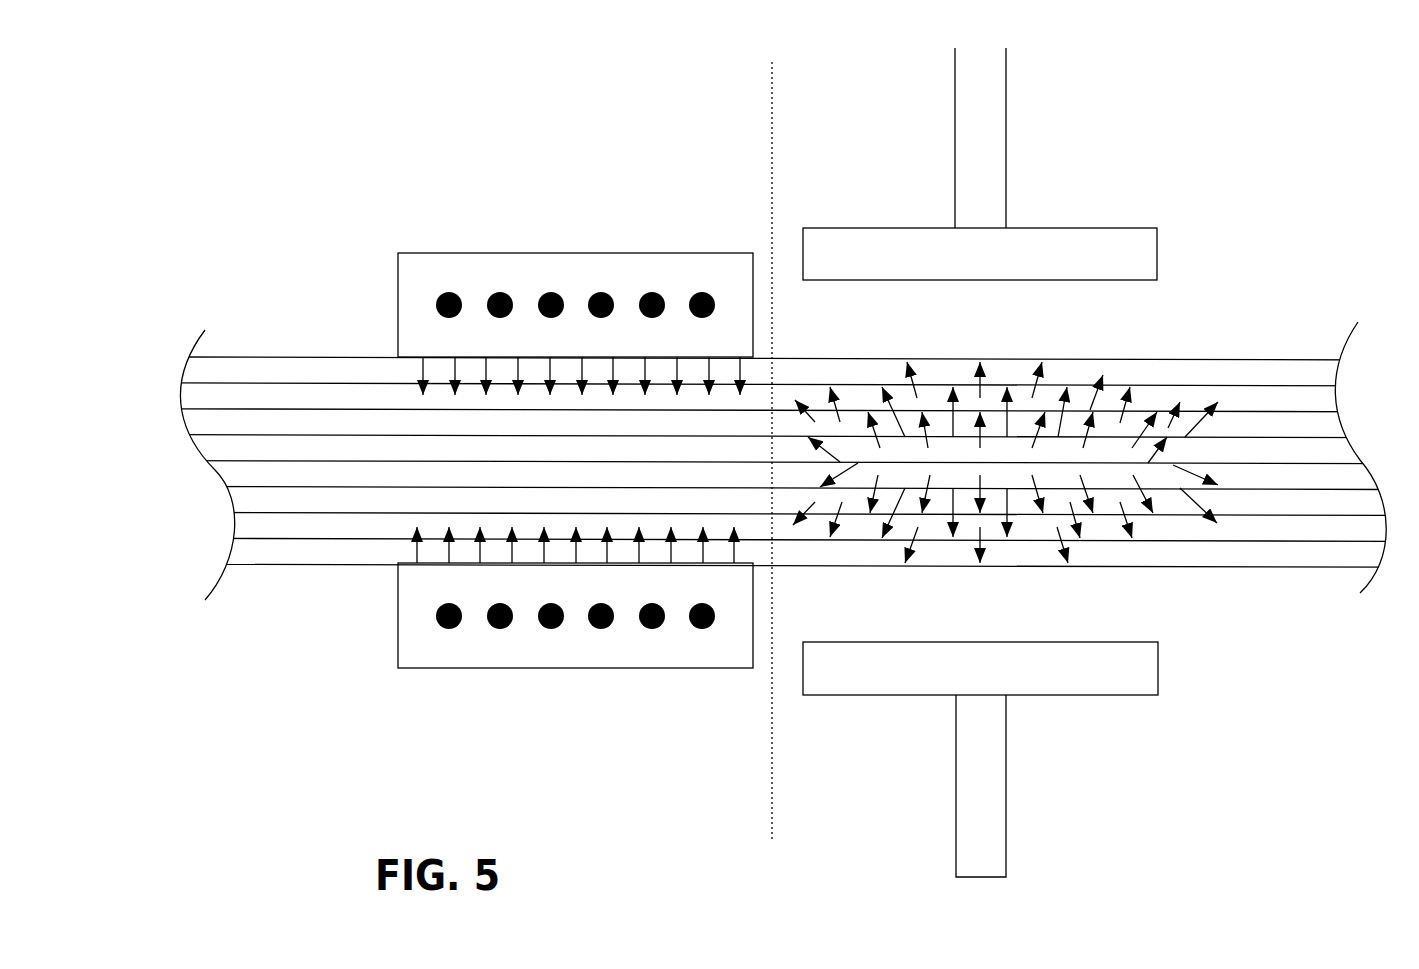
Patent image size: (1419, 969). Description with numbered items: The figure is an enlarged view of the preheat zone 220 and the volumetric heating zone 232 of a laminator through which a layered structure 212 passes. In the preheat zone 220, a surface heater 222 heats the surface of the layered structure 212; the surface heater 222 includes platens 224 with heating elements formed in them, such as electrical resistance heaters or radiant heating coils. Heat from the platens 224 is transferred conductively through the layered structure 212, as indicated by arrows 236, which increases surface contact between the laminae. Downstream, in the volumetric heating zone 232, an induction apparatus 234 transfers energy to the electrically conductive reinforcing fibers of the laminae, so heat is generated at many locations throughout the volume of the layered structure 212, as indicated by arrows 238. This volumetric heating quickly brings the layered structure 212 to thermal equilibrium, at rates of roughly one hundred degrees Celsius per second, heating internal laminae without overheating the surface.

The layered structure 212 is at (255, 302).
The preheat zone 220 is at (515, 415).
The surface heater 222 is at (580, 233).
The platen 224 is at (513, 252).
The volumetric heating zone 232 is at (1005, 462).
The induction apparatus 234 is at (1032, 228).
The arrows 236 is at (423, 372).
The arrows 238 is at (1040, 383).